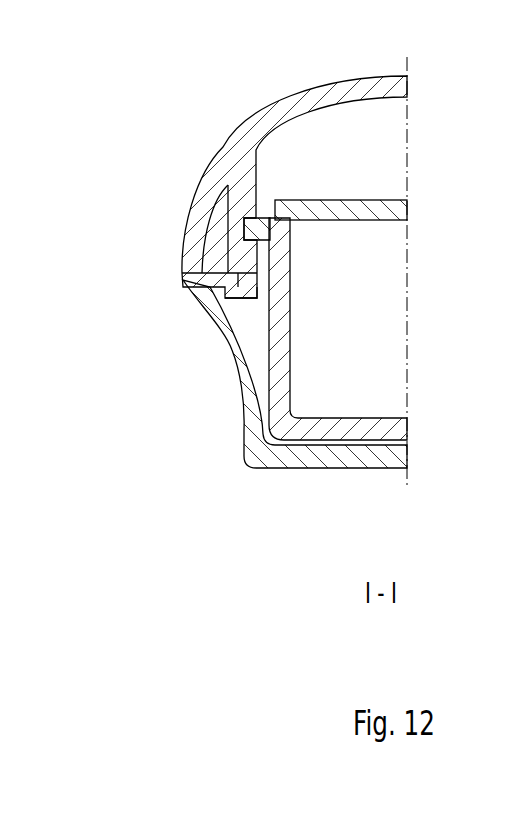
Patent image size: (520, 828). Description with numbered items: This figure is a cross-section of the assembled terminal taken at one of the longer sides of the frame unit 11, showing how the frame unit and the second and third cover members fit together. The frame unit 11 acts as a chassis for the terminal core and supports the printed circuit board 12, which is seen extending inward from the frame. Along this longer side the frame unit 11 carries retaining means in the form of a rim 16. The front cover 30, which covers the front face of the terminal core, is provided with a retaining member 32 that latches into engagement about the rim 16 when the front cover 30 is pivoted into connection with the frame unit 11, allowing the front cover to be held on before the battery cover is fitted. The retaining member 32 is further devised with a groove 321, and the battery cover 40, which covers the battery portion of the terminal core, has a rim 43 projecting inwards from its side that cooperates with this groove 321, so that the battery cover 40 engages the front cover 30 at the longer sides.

The second cover member 30 is at (367, 76).
The retaining member 32 is at (230, 202).
The groove 321 is at (247, 277).
The rim 43 is at (183, 283).
The retaining means 16 is at (265, 227).
The printed circuit board 12 is at (378, 199).
The frame unit 11 is at (343, 423).
The third cover member 40 is at (253, 457).